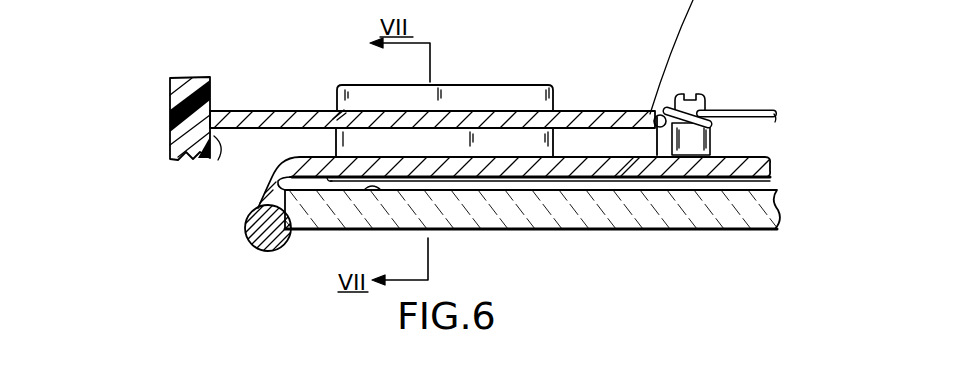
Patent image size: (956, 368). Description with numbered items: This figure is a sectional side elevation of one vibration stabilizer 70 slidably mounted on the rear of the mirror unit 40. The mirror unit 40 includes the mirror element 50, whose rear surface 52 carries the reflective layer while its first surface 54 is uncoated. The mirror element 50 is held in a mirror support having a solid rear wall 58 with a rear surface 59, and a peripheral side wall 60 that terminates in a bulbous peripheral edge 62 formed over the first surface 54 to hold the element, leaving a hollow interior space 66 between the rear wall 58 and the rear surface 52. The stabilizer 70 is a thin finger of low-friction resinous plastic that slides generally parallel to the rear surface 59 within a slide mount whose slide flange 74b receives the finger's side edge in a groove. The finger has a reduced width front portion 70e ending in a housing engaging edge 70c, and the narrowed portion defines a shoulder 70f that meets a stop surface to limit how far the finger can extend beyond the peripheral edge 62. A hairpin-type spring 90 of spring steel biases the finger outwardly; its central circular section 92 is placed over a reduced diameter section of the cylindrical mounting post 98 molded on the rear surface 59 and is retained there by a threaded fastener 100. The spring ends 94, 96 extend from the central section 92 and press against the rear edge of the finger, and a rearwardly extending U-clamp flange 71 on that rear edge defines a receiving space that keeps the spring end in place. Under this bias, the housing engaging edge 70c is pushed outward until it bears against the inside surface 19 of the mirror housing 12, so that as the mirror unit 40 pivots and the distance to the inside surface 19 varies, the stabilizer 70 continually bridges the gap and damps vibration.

The mirror housing 12 is at (170, 96).
The inside surface of mirror housing 19 is at (214, 138).
The mirror unit 40 is at (236, 228).
The mirror element 50 is at (480, 220).
The rear surface of mirror element 52 is at (363, 188).
The first surface of mirror element 54 is at (580, 232).
The rear wall 58 is at (627, 167).
The rear surface of rear wall 59 is at (742, 157).
The peripheral side wall 60 is at (270, 170).
The peripheral edge 62 is at (267, 243).
The hollow interior space 66 is at (517, 183).
The vibration stabilizer 70 is at (580, 104).
The housing engaging edge 70c is at (186, 84).
The reduced width front portion 70e is at (252, 110).
The shoulder 70f is at (332, 108).
The U-clamp flange 71 is at (655, 116).
The slide flange 74b is at (450, 99).
The hairpin-type spring 90 is at (732, 144).
The central circular section 92 is at (711, 120).
The spring end 94 is at (652, 114).
The spring end 96 is at (770, 108).
The mounting post 98 is at (690, 137).
The threaded fastener 100 is at (703, 97).